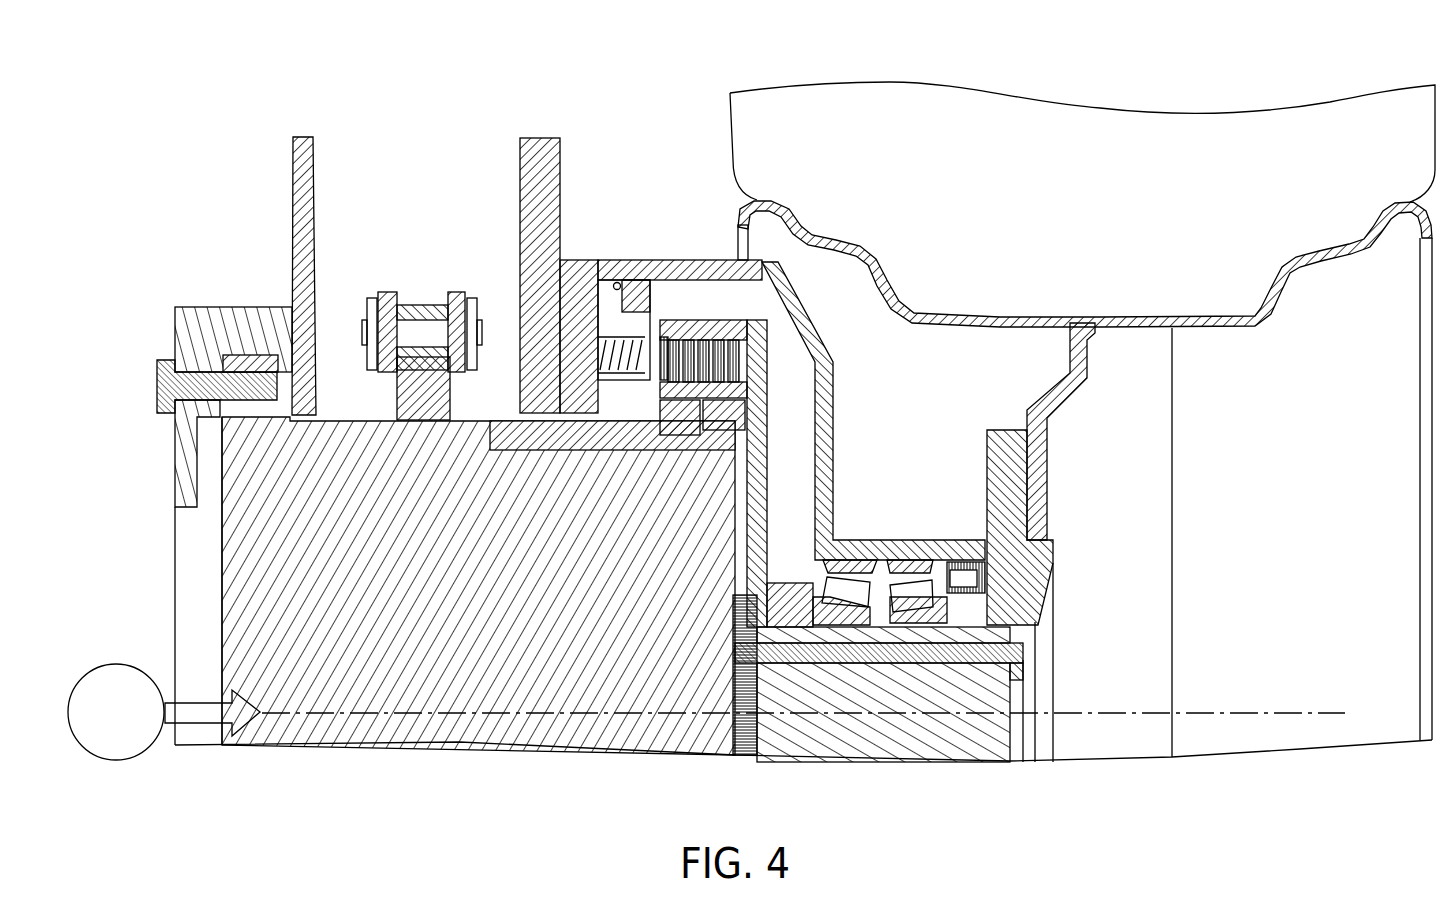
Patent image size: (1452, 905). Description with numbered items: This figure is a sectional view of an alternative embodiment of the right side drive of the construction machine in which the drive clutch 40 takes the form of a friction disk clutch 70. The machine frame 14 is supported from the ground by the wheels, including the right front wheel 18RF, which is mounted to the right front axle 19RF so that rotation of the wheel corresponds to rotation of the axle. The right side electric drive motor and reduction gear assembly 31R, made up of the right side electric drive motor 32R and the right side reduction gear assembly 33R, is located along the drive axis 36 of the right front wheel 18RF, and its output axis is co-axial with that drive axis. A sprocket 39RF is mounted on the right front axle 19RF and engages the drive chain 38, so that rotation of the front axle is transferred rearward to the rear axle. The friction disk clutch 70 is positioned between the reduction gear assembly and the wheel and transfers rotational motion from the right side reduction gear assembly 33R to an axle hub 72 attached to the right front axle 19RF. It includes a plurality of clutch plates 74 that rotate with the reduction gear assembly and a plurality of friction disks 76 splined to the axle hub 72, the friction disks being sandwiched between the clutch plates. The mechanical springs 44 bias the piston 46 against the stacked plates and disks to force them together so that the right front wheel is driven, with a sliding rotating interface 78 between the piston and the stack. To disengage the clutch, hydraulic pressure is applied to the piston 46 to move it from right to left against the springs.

The machine frame 14 is at (302, 152).
The right front wheel 18RF is at (1080, 168).
The right front axle 19RF is at (878, 742).
The right side electric drive motor and reduction gear assembly 31R is at (318, 589).
The right side electric drive motor 32R is at (140, 760).
The right side reduction gear assembly 33R is at (402, 680).
The drive axis 36 is at (1250, 716).
The drive chain 38 is at (388, 292).
The sprocket of the right front axle 39RF is at (397, 373).
The drive clutch 40 is at (725, 210).
The friction disk clutch 70 is at (707, 288).
The mechanical springs 44 is at (577, 352).
The hydraulic piston 46 is at (596, 283).
The axle hub 72 is at (763, 407).
The clutch plates 74 is at (680, 440).
The friction disks 76 is at (734, 338).
The sliding rotating interface 78 is at (672, 337).